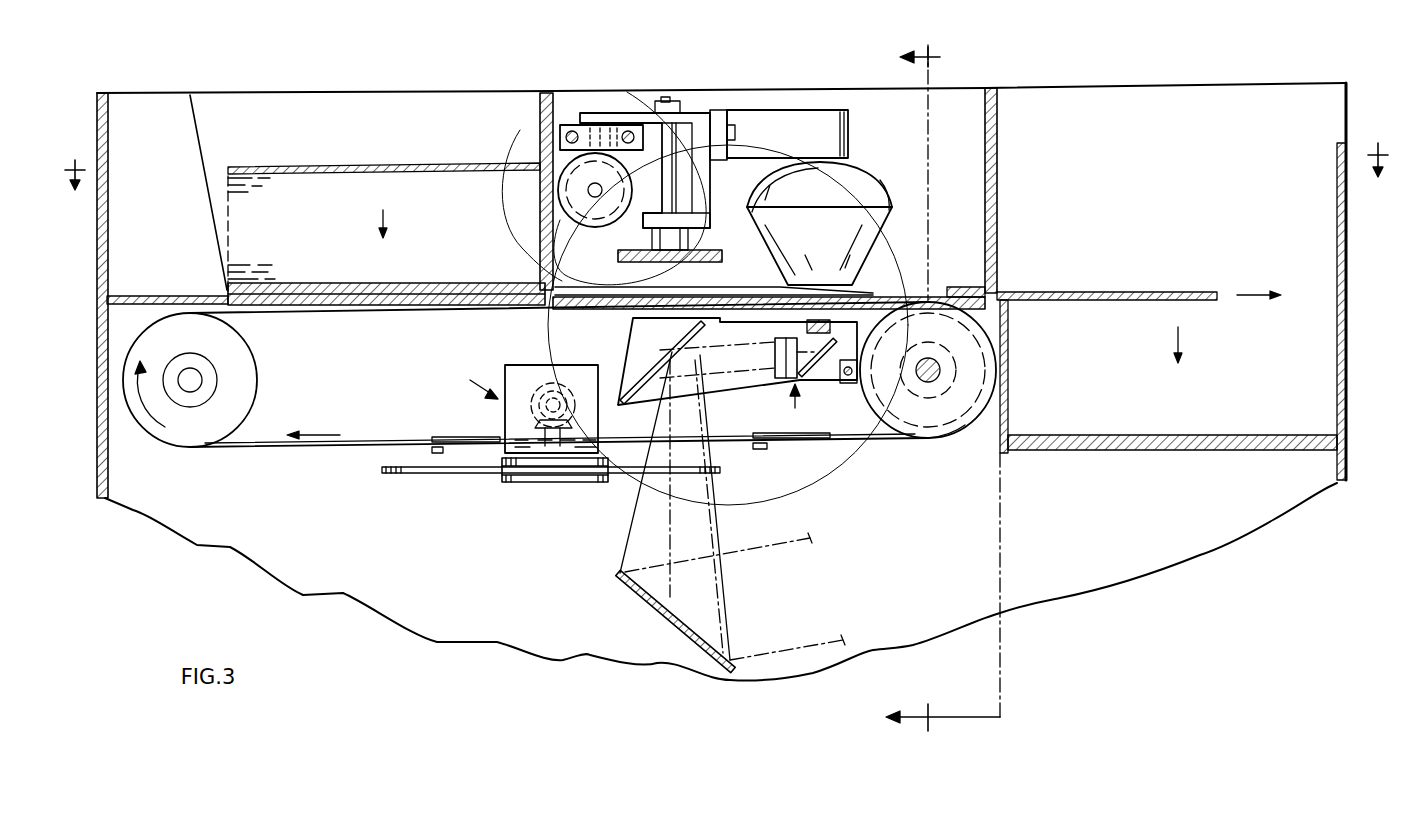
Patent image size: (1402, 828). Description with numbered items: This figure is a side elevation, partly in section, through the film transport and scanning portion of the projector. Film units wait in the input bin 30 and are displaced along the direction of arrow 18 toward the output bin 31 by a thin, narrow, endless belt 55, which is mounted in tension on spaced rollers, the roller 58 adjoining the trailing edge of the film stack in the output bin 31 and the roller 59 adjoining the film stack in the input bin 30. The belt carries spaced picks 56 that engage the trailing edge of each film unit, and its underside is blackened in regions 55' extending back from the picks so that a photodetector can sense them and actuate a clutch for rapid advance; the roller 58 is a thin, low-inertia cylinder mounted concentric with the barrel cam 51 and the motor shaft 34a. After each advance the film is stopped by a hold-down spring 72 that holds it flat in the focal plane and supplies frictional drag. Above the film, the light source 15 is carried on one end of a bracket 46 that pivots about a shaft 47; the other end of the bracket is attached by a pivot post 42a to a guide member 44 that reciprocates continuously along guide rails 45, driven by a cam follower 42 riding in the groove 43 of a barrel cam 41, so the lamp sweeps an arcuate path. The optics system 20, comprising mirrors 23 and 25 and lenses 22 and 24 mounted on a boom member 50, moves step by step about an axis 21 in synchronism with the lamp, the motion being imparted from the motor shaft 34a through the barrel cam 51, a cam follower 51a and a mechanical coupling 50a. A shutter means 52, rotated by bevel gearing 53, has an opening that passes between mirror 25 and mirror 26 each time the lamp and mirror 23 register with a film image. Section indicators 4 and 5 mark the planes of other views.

The input bin 30 is at (362, 107).
The output bin 31 is at (1326, 409).
The arrow (film displacement direction) 18 is at (1262, 292).
The light source 15 is at (882, 180).
The lens 22 is at (878, 303).
The film hold-down spring 72 is at (698, 288).
The barrel cam 41 is at (612, 230).
The cam follower 42 is at (675, 160).
The pivot post 42a is at (607, 135).
The groove 43 is at (650, 222).
The guide member 44 is at (578, 125).
The guide rails 45 is at (628, 128).
The bracket 46 is at (688, 112).
The shaft 47 is at (677, 184).
The boom member 50 is at (633, 330).
The mirror 25 is at (647, 378).
The lens 24 is at (778, 380).
The mirror 23 is at (817, 375).
The optics system 20 is at (793, 408).
The axis 21 is at (668, 505).
The mirror 26 is at (650, 606).
The barrel cam 51 is at (990, 360).
The mechanical coupling 50a is at (897, 323).
The cam follower 51a is at (928, 384).
The motor shaft 34a is at (936, 378).
The roller 58 is at (968, 430).
The roller 59 is at (258, 397).
The endless belt 55 is at (559, 393).
The blackened belt region 55' is at (630, 430).
The picks 56 is at (423, 450).
The bevel gearing 53 is at (521, 406).
The shutter means 52 is at (455, 478).
The section line 5 is at (956, 388).
The section line 4 is at (726, 153).